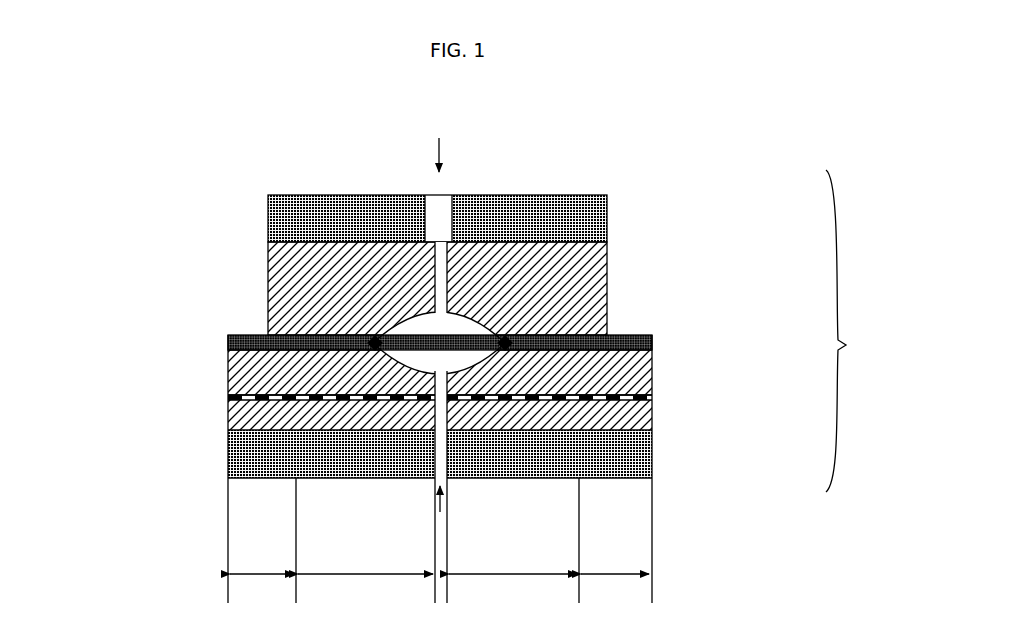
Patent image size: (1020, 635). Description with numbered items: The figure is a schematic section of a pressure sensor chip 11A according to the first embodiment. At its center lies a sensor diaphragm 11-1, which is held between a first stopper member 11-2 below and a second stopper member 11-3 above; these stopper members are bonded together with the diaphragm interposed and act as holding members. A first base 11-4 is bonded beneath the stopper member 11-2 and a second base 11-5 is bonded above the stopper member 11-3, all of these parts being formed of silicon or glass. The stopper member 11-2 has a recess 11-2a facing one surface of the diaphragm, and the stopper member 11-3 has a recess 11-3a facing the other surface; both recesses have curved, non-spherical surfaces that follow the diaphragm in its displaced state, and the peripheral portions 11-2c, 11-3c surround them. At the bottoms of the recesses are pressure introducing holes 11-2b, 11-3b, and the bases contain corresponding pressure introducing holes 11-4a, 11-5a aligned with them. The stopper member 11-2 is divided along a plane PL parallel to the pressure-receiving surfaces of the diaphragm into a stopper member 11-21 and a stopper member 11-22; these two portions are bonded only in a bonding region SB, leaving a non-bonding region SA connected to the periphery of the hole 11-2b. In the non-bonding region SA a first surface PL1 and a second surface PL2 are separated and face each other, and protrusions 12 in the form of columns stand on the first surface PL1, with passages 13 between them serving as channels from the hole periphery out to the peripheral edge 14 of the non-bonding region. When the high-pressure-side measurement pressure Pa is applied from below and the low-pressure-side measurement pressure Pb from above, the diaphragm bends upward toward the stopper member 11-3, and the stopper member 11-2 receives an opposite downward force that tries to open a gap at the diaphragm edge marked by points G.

The pressure sensor chip 11A is at (859, 331).
The sensor diaphragm 11-1 is at (652, 342).
The first stopper member 11-2 is at (652, 380).
The stopper member 11-21 is at (240, 375).
The stopper member 11-22 is at (228, 405).
The recess 11-2a is at (470, 380).
The pressure introducing hole 11-2b is at (433, 440).
The peripheral portion 11-2c is at (232, 355).
The second stopper member 11-3 is at (607, 272).
The recess 11-3a is at (460, 325).
The pressure introducing hole 11-3b is at (373, 336).
The peripheral portion 11-3c is at (268, 308).
The first base 11-4 is at (652, 462).
The pressure introducing hole 11-4a is at (430, 478).
The second base 11-5 is at (607, 207).
The pressure introducing hole 11-5a is at (437, 204).
The protrusion 12 is at (403, 364).
The passage 13 is at (372, 420).
The peripheral edge 14 is at (652, 418).
The diaphragm edge points G is at (365, 338).
The plane PL is at (228, 387).
The first surface PL1 is at (345, 400).
The second surface PL2 is at (268, 242).
The non-bonding region SA is at (437, 560).
The bonding region SB is at (439, 560).
The measurement pressure Pa is at (456, 501).
The measurement pressure Pb is at (442, 136).